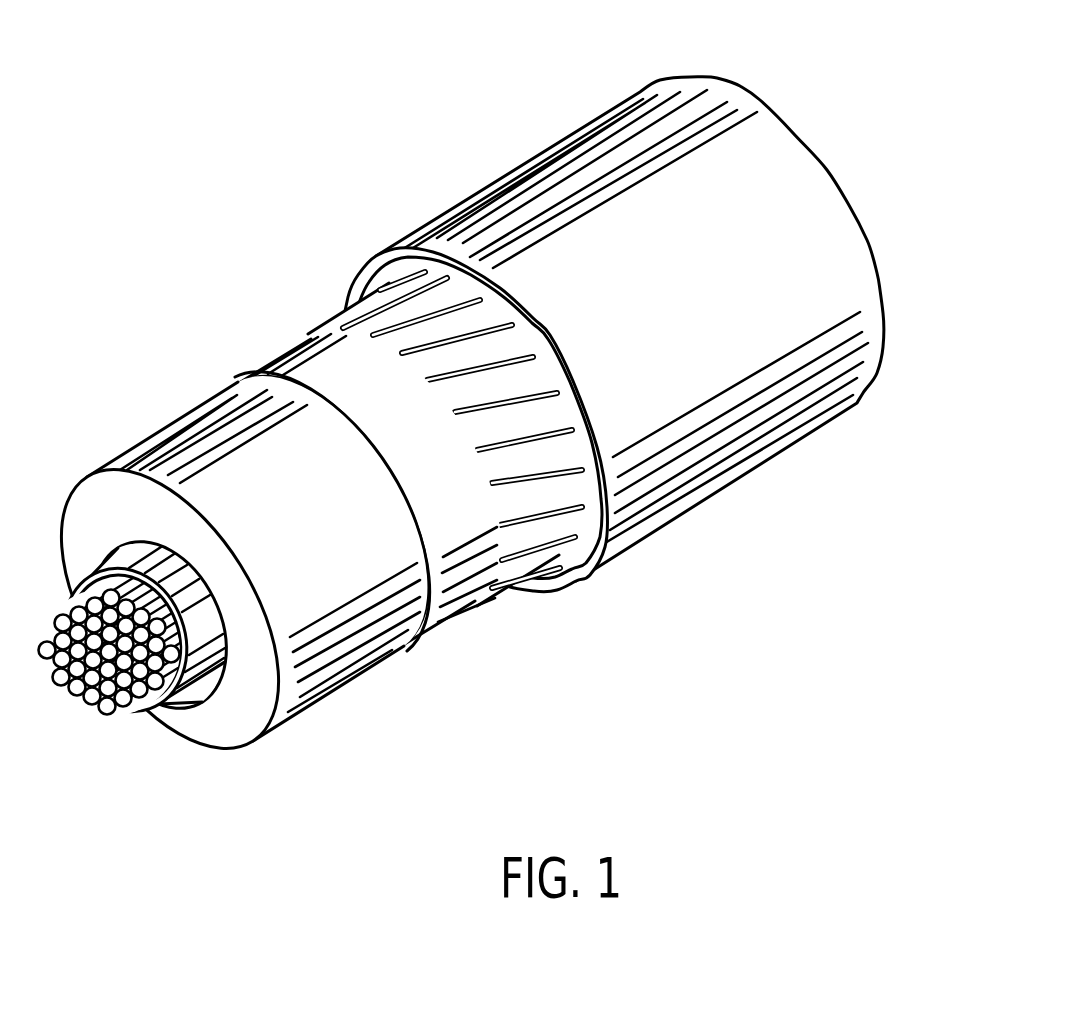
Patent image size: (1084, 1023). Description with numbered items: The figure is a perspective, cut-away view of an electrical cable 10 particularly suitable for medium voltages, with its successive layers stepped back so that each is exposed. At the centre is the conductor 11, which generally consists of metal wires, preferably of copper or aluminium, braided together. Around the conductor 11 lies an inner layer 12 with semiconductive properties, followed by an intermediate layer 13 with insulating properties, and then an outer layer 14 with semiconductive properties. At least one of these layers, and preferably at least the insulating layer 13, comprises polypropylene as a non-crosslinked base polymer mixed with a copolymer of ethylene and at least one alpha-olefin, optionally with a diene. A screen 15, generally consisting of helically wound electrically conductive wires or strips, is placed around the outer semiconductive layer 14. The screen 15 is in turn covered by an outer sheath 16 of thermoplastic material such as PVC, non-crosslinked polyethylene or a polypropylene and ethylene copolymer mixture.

The electrical cable 10 is at (450, 454).
The conductor 11 is at (150, 715).
The inner layer 12 is at (200, 667).
The intermediate layer 13 is at (97, 503).
The outer layer 14 is at (293, 353).
The screen 15 is at (512, 563).
The outer sheath 16 is at (718, 468).